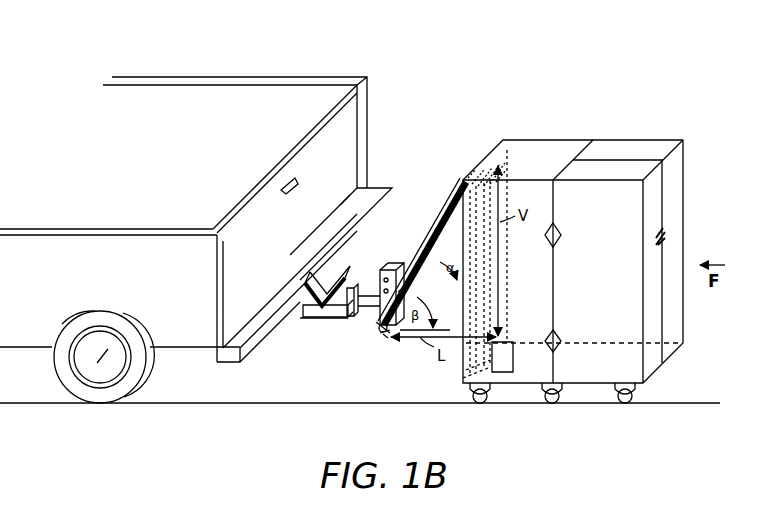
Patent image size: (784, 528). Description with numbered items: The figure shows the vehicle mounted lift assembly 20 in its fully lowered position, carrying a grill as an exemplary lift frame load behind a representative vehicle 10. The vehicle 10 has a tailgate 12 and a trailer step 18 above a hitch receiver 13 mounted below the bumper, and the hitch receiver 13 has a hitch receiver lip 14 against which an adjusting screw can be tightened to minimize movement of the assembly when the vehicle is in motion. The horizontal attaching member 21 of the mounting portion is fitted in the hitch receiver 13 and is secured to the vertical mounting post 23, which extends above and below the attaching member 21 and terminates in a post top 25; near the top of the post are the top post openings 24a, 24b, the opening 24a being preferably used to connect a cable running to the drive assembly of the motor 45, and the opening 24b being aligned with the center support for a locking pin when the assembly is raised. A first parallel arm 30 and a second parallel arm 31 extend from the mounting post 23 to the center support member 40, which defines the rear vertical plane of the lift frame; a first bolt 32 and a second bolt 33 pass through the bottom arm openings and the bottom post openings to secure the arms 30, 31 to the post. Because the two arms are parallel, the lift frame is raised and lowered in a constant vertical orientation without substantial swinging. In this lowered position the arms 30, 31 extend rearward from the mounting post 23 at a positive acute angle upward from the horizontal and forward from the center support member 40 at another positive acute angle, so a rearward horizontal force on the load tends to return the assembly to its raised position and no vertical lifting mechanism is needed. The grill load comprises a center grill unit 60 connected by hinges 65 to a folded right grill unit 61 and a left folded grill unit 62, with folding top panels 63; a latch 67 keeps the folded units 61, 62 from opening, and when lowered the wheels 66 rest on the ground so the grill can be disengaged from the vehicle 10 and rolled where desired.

The vehicle 10 is at (374, 70).
The tailgate 12 is at (260, 274).
The hitch receiver 13 is at (305, 318).
The hitch receiver lip 14 is at (345, 312).
The trailer step 18 is at (328, 268).
The lift assembly 20 is at (392, 348).
The horizontal attaching member 21 is at (345, 256).
The vertical mounting post 23 is at (374, 304).
The top post opening 24a is at (402, 288).
The top post opening 24b is at (348, 208).
The post top 25 is at (389, 268).
The first parallel arm 30 is at (446, 215).
The second parallel arm 31 is at (415, 290).
The first bolt 32 is at (380, 333).
The second bolt 33 is at (388, 333).
The center support member 40 is at (512, 318).
The motor 45 is at (492, 358).
The center grill unit 60 is at (548, 277).
The folded right grill unit 61 is at (672, 170).
The left folded grill unit 62 is at (613, 249).
The folding top panels 63 is at (548, 172).
The hinges 65 is at (560, 331).
The wheels 66 is at (488, 400).
The latch 67 is at (664, 234).